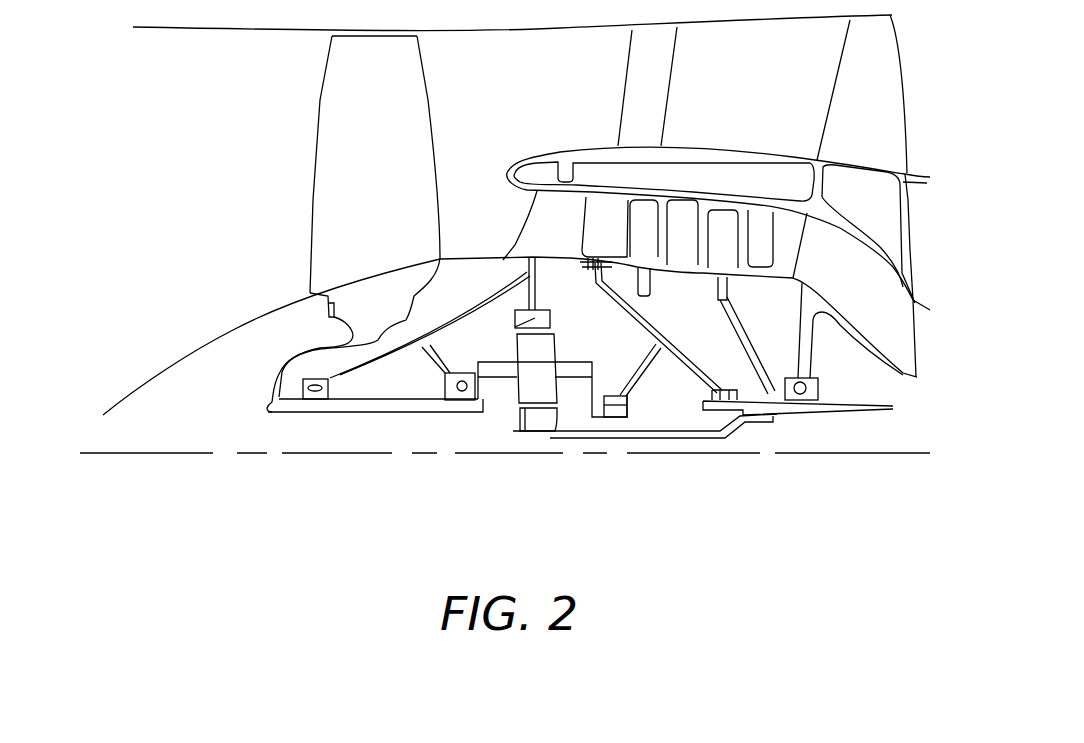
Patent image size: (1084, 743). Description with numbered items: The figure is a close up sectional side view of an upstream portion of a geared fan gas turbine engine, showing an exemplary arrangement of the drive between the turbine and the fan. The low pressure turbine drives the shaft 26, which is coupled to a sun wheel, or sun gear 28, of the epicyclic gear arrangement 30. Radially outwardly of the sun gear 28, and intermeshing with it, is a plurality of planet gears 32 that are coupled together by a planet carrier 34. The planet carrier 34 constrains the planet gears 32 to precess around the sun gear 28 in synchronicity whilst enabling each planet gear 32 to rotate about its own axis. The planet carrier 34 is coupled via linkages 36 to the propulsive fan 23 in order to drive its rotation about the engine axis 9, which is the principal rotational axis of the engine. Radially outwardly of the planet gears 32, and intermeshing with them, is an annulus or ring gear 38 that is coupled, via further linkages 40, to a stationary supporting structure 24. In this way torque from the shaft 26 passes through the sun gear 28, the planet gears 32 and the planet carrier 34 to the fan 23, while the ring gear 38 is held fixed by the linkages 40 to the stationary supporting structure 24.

The principal rotational axis 9 is at (212, 457).
The propulsive fan 23 is at (332, 144).
The stationary supporting structure 24 is at (537, 222).
The shaft 26 is at (790, 412).
The sun gear 28 is at (538, 420).
The epicyclic gearbox 30 is at (503, 405).
The planet gears 32 is at (515, 400).
The planet carrier 34 is at (588, 390).
The linkages 36 is at (485, 397).
The ring gear 38 is at (515, 327).
The linkages 40 is at (528, 295).